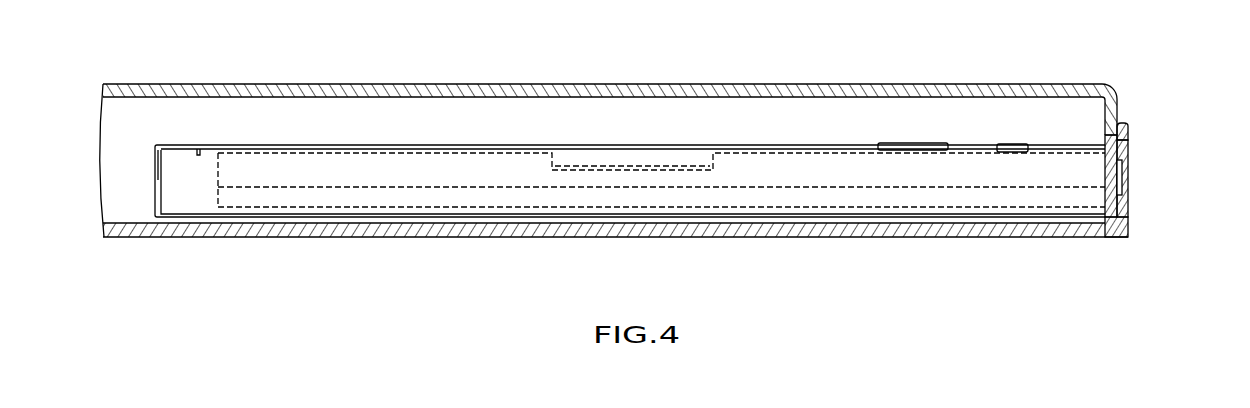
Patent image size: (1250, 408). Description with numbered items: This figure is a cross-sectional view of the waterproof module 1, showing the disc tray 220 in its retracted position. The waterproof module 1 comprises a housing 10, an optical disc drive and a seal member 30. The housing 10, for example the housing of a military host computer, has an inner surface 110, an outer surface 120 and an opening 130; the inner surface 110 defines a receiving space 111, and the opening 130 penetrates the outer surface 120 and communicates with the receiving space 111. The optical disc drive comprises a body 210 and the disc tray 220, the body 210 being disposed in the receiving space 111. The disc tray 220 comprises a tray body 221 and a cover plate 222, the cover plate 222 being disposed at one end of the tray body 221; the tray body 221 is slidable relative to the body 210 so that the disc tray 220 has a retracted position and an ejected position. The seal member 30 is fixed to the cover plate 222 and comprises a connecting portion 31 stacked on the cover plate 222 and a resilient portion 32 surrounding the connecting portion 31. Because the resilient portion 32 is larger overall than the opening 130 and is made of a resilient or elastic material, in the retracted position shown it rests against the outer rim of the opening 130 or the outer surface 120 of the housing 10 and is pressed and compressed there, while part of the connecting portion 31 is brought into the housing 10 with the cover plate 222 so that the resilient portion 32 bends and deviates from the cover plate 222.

The waterproof module 1 is at (846, 16).
The housing 10 is at (406, 84).
The inner surface 110 is at (640, 97).
The receiving space 111 is at (172, 122).
The outer surface 120 is at (1120, 102).
The opening 130 is at (1098, 133).
The body 210 is at (187, 188).
The disc tray 220 is at (1052, 291).
The tray body 221 is at (892, 200).
The cover plate 222 is at (1107, 195).
The seal member 30 is at (1196, 105).
The connecting portion 31 is at (1122, 167).
The resilient portion 32 is at (1130, 132).